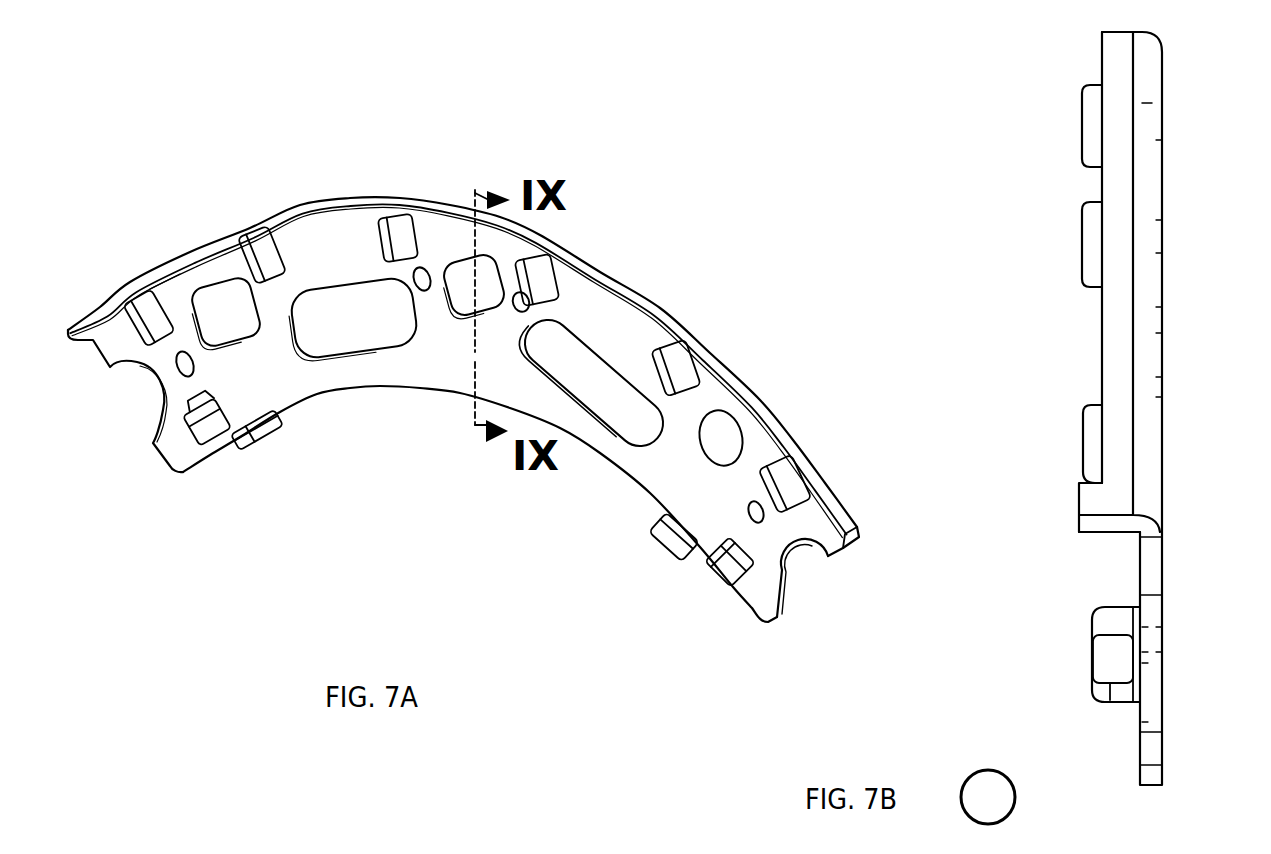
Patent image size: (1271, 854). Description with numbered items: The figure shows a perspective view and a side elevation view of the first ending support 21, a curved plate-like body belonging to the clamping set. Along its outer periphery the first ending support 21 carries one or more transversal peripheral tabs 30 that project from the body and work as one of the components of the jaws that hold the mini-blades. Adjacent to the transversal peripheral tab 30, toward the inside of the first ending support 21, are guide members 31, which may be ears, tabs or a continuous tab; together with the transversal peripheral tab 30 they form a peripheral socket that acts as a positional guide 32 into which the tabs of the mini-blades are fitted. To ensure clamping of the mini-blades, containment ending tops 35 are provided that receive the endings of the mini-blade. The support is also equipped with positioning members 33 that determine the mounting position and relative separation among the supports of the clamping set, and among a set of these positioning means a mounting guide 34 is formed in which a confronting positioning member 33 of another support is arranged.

In FIG. 7A, the first ending support 21 is at (663, 452).
In FIG. 7B, the first ending support 21 is at (1164, 414).
In FIG. 7A, the transversal peripheral tab 30 is at (120, 295).
In FIG. 7B, the transversal peripheral tab 30 is at (1118, 165).
In FIG. 7A, the guide member 31 is at (104, 344).
In FIG. 7B, the guide member 31 is at (1090, 238).
In FIG. 7A, the positional guide 32 is at (160, 289).
In FIG. 7A, the positioning member 33 is at (190, 435).
In FIG. 7B, the positioning member 33 is at (1108, 655).
In FIG. 7A, the mounting guide 34 is at (246, 414).
In FIG. 7A, the containment ending top 35 is at (817, 517).
In FIG. 7B, the containment ending top 35 is at (1087, 481).